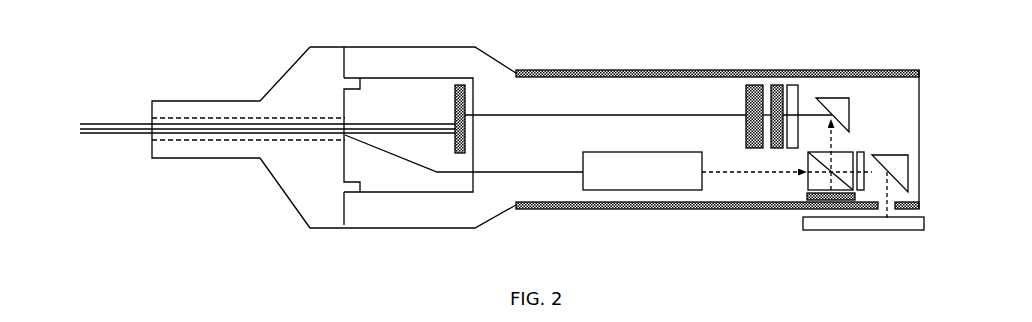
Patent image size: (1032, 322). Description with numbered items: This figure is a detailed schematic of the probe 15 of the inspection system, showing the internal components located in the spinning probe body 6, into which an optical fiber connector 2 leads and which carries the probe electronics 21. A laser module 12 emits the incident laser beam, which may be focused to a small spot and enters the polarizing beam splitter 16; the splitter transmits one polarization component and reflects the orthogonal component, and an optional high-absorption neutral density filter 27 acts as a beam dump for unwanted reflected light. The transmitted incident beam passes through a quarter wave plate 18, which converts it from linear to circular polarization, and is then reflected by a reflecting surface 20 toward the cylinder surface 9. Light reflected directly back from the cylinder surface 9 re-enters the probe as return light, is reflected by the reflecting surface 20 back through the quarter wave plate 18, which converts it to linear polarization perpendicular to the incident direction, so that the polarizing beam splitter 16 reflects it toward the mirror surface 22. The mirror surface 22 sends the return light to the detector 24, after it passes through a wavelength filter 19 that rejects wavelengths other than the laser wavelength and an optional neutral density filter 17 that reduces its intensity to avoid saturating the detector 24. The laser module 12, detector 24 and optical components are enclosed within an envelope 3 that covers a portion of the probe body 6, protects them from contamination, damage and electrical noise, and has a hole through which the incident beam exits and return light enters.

The optical fiber connector 2 is at (278, 98).
The envelope 3 is at (658, 70).
The probe body 6 is at (406, 61).
The cylinder surface 9 is at (877, 221).
The laser module 12 is at (622, 168).
The probe 15 is at (604, 58).
The polarizing beam splitter 16 is at (806, 181).
The neutral density filter 17 is at (777, 89).
The quarter wave plate 18 is at (862, 151).
The wavelength filter 19 is at (798, 91).
The reflecting surface 20 is at (891, 172).
The probe electronics 21 is at (453, 100).
The mirror surface 22 is at (835, 112).
The detector 24 is at (746, 93).
The high-absorption neutral density filter 27 is at (803, 201).